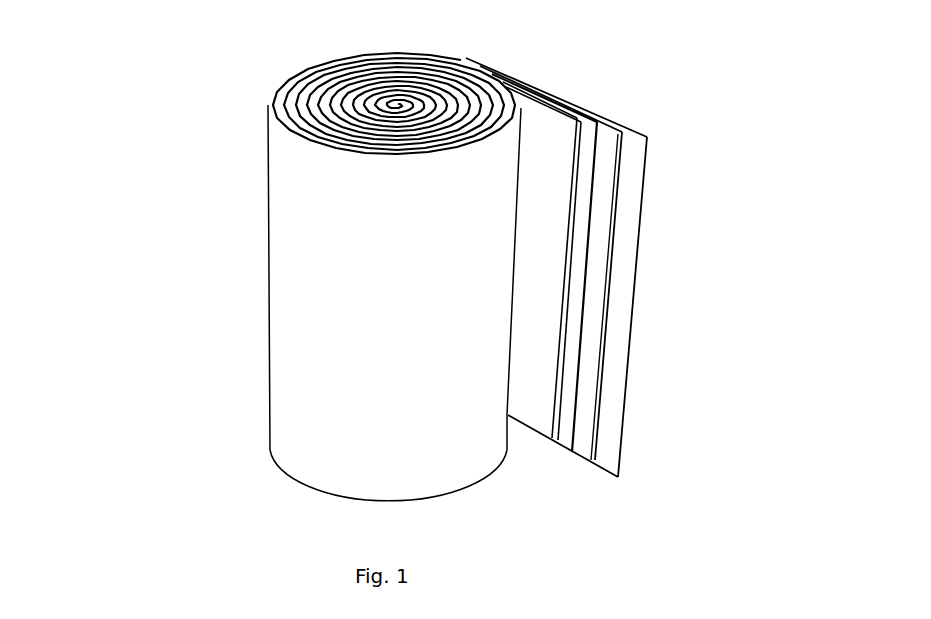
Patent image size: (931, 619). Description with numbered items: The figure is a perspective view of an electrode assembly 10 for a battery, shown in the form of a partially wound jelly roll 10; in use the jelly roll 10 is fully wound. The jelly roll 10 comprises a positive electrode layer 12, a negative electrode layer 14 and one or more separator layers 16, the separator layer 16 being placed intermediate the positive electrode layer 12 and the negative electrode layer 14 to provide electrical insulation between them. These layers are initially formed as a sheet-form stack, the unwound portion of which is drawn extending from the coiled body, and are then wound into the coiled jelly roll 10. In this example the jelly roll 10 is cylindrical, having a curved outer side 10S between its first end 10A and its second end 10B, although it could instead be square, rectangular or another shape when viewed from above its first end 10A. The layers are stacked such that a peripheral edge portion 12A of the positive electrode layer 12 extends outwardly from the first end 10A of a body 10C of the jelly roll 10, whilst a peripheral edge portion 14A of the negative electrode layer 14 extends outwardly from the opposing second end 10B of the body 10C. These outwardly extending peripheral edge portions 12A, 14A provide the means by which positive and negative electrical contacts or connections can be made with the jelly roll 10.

The electrode assembly 10 is at (226, 208).
The first end 10A is at (297, 70).
The second end 10B is at (292, 478).
The body 10C is at (272, 318).
The curved outer side 10S is at (402, 295).
The positive electrode layer 12 is at (578, 263).
The peripheral edge portion 12A is at (572, 110).
The negative electrode layer 14 is at (630, 200).
The peripheral edge portion 14A is at (607, 465).
The separator layer 16 is at (542, 363).